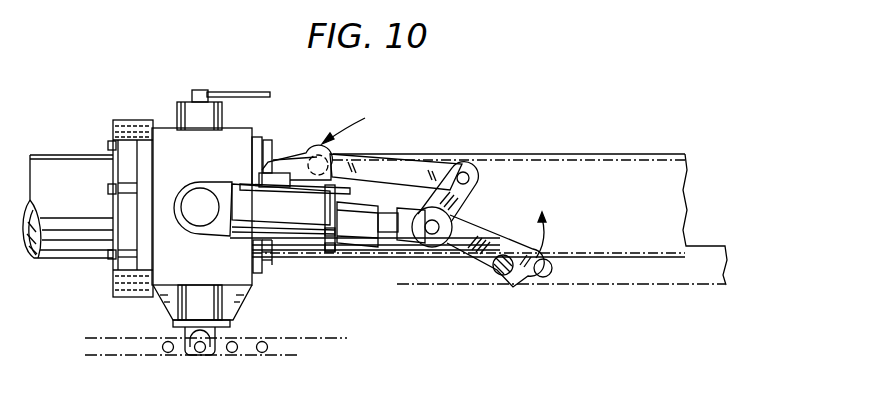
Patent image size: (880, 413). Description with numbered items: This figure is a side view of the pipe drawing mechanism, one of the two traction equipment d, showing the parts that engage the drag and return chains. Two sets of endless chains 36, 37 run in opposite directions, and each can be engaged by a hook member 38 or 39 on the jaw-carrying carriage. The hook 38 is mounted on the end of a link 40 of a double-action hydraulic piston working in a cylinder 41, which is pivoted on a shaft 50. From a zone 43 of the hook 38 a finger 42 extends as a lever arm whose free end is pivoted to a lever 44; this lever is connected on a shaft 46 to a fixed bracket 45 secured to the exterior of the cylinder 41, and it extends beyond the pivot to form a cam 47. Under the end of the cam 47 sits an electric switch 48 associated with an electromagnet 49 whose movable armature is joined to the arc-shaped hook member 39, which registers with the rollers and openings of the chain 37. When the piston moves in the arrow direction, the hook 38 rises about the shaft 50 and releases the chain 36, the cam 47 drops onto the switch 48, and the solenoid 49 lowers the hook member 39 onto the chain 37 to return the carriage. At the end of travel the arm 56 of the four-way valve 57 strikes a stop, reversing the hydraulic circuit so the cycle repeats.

The endless chain 36 is at (502, 274).
The endless chain 37 is at (232, 354).
The hook member 38 is at (542, 276).
The hook member 39 is at (192, 352).
The link 40 is at (385, 236).
The cylinder 41 is at (303, 232).
The finger 42 is at (468, 190).
The zone 43 is at (432, 229).
The lever 44 is at (437, 167).
The fixed bracket 45 is at (326, 180).
The shaft 46 is at (324, 158).
The cam 47 is at (293, 157).
The electric switch 48 is at (280, 172).
The electromagnet 49 is at (240, 292).
The shaft 50 is at (198, 215).
The arm 56 is at (262, 92).
The four-way valve 57 is at (185, 108).
The traction equipment d is at (345, 119).